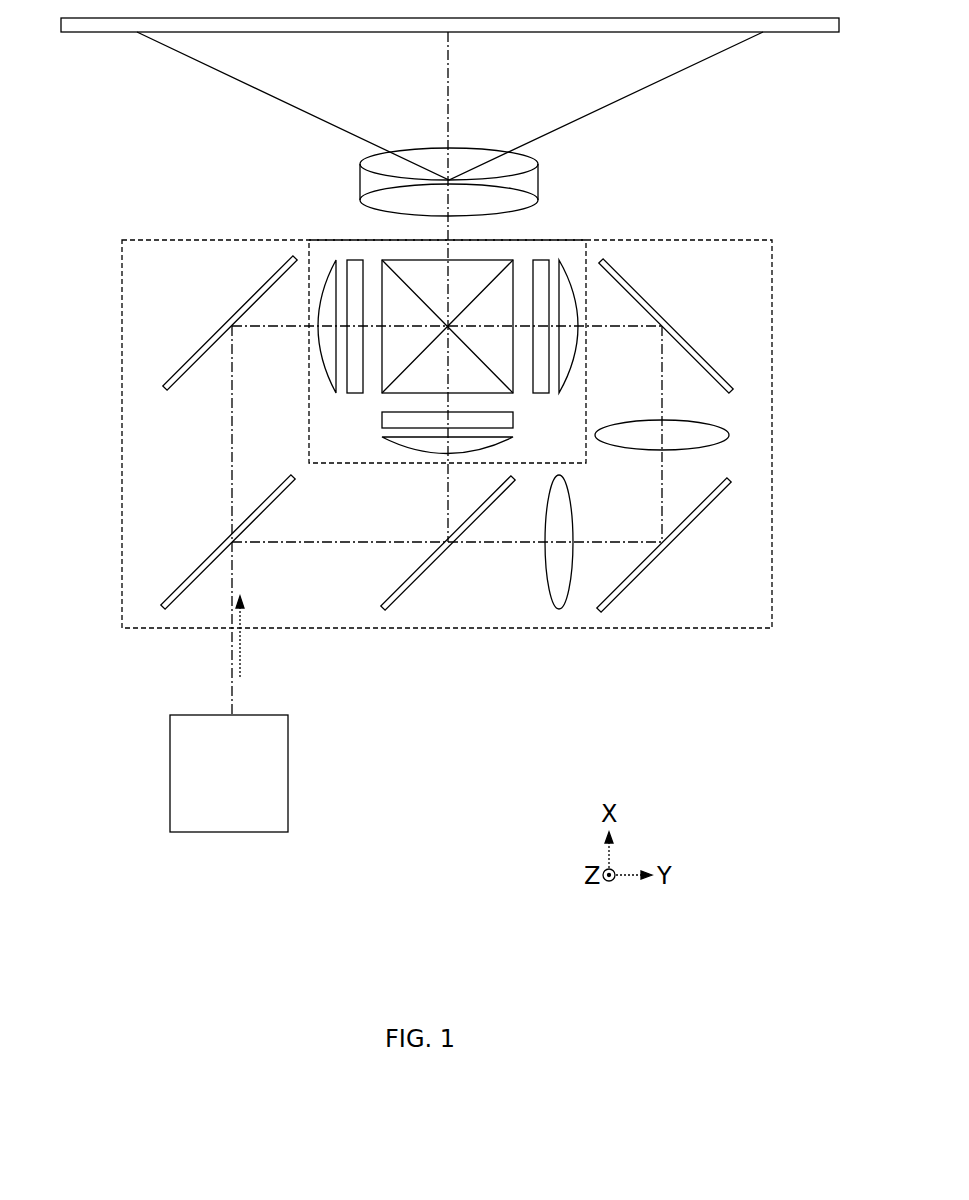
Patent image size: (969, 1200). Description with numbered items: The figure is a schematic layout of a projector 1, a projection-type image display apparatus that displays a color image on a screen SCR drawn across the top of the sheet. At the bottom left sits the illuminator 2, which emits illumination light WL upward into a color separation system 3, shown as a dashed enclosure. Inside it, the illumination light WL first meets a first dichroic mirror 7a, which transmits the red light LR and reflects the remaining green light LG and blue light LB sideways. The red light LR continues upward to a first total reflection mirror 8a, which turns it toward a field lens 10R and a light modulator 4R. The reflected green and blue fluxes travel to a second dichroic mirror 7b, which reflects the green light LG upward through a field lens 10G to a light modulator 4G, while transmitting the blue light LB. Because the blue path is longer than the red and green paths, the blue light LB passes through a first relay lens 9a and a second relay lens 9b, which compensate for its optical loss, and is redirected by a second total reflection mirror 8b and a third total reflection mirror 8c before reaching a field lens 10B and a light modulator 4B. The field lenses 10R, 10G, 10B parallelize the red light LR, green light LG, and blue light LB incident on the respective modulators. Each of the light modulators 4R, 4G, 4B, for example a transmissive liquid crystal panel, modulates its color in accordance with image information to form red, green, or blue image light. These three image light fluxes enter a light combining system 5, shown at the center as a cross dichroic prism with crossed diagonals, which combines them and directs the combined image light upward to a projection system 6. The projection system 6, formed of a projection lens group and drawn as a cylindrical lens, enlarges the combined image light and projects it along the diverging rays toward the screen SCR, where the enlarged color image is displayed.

The projector 1 is at (786, 216).
The illuminator 2 is at (288, 772).
The color separation system 3 is at (122, 380).
The light modulator 4R is at (353, 258).
The light modulator 4G is at (385, 420).
The light modulator 4B is at (541, 258).
The light combining system 5 is at (471, 278).
The projection system 6 is at (430, 158).
The first dichroic mirror 7a is at (195, 572).
The second dichroic mirror 7b is at (424, 572).
The first total reflection mirror 8a is at (209, 338).
The second total reflection mirror 8b is at (683, 527).
The third total reflection mirror 8c is at (692, 345).
The first relay lens 9a is at (545, 566).
The second relay lens 9b is at (729, 432).
The field lens 10R is at (331, 258).
The field lens 10G is at (385, 440).
The field lens 10B is at (563, 258).
The screen SCR is at (805, 34).
The illumination light WL is at (242, 657).
The red light LR is at (232, 455).
The green light LG is at (448, 500).
The blue light LB is at (662, 490).